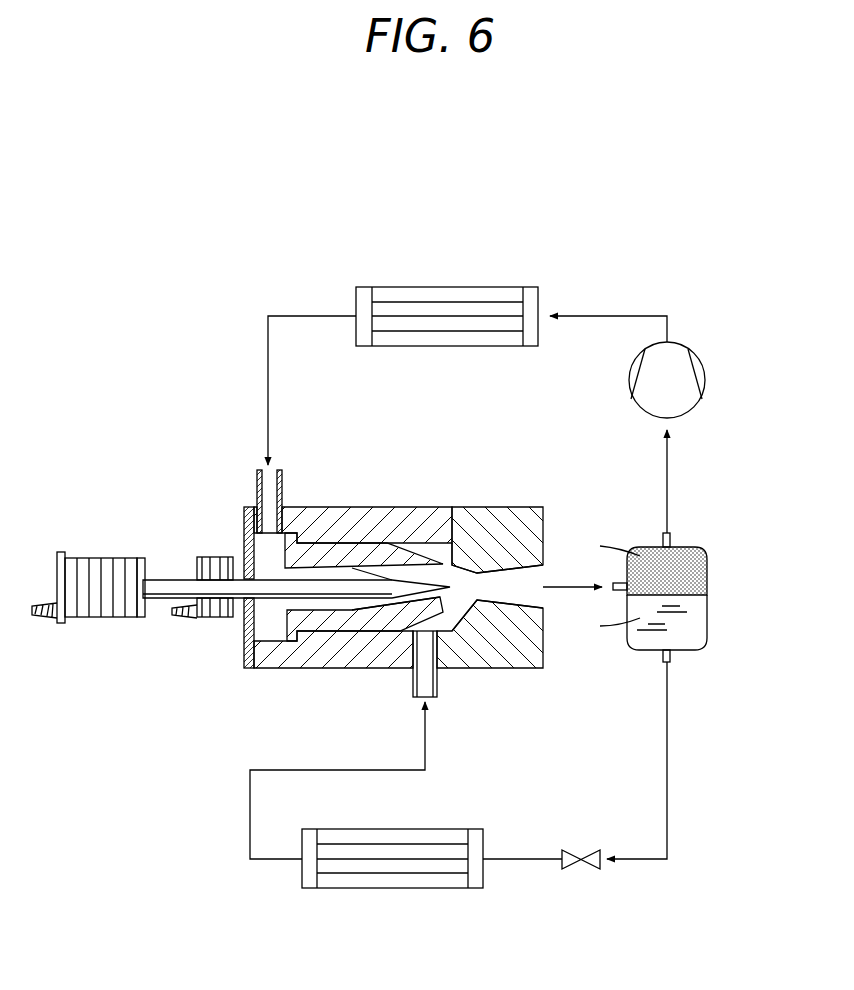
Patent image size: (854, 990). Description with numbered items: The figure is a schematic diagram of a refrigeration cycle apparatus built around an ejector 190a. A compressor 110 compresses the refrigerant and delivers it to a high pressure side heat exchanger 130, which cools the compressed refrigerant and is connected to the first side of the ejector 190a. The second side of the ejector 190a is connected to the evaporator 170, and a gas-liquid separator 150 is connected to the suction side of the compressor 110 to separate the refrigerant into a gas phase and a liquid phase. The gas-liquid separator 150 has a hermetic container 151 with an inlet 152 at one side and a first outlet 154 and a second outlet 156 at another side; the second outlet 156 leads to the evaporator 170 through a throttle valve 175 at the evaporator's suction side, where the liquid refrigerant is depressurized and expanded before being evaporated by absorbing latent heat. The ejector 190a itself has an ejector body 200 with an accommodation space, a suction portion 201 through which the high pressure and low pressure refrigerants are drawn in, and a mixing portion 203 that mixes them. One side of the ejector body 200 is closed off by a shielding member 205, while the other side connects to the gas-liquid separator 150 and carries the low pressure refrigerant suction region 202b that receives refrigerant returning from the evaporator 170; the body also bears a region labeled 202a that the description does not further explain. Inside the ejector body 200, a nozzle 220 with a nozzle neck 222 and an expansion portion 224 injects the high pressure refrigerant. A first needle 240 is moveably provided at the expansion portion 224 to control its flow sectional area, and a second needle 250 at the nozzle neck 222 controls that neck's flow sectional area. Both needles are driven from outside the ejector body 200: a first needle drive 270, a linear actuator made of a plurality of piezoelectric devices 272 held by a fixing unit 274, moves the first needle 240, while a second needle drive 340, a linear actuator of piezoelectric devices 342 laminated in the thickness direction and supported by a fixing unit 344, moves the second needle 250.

The compressor 110 is at (701, 361).
The high pressure side heat exchanger 130 is at (456, 287).
The gas-liquid separator 150 is at (708, 588).
The hermetic container 151 is at (708, 568).
The inlet 152 is at (688, 595).
The first outlet 154 is at (672, 540).
The second outlet 156 is at (720, 647).
The evaporator 170 is at (372, 889).
The throttle valve 175 is at (582, 871).
The ejector 190a is at (83, 508).
The ejector body 200 is at (393, 521).
The suction portion 201 is at (393, 521).
The first body part 202a is at (290, 505).
The low pressure refrigerant suction region 202b is at (437, 688).
The mixing portion 203 is at (446, 581).
The shielding member 205 is at (255, 505).
The nozzle 220 is at (306, 632).
The nozzle neck 222 is at (425, 610).
The expansion portion 224 is at (415, 634).
The first needle 240 is at (161, 575).
The second needle 250 is at (263, 567).
The first needle drive 270 is at (82, 533).
The piezoelectric devices 272 is at (71, 560).
The fixing unit 274 is at (61, 552).
The second needle drive 340 is at (207, 649).
The piezoelectric device 342 is at (210, 620).
The fixing unit 344 is at (196, 619).